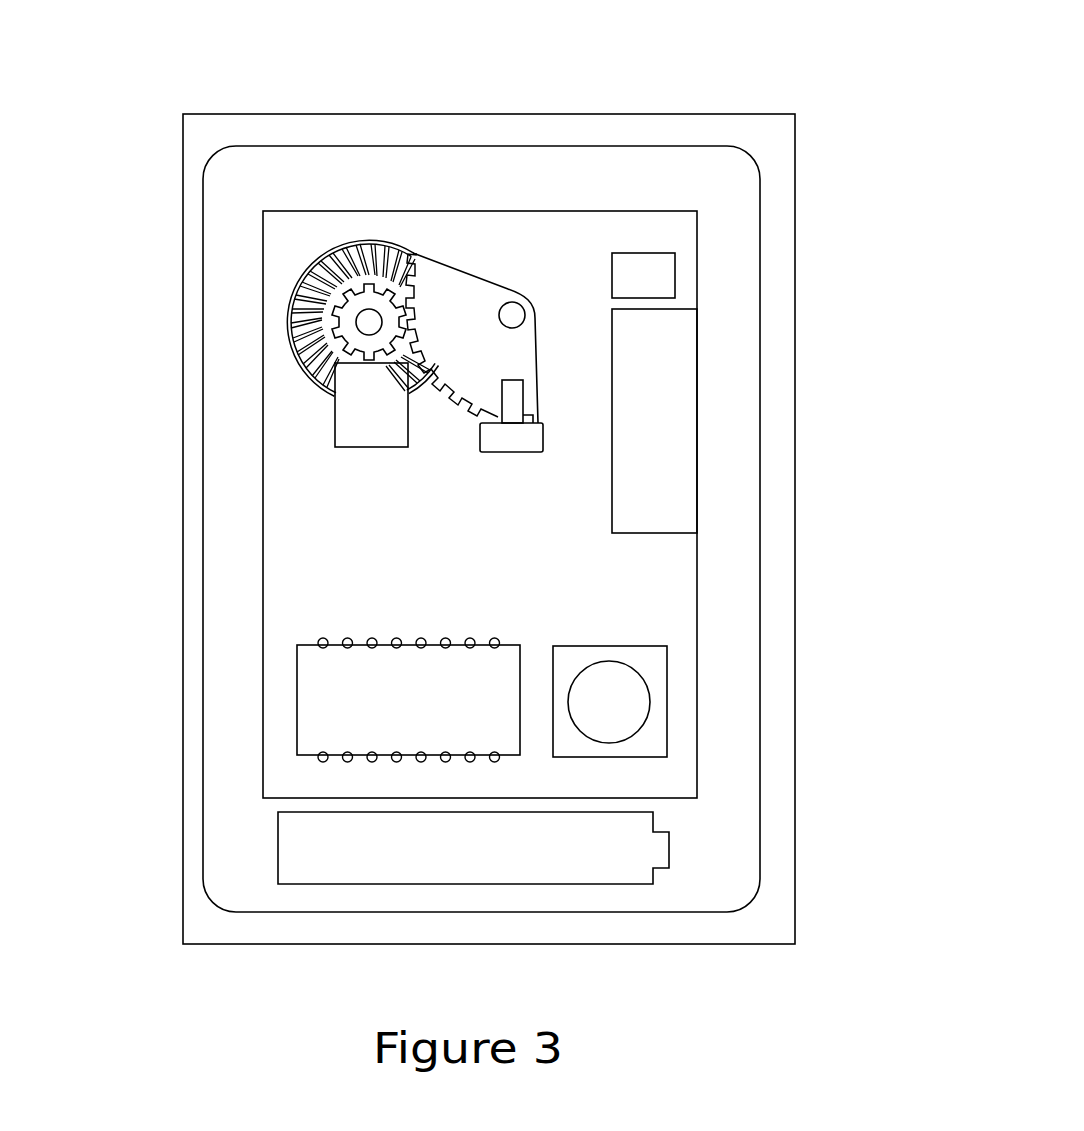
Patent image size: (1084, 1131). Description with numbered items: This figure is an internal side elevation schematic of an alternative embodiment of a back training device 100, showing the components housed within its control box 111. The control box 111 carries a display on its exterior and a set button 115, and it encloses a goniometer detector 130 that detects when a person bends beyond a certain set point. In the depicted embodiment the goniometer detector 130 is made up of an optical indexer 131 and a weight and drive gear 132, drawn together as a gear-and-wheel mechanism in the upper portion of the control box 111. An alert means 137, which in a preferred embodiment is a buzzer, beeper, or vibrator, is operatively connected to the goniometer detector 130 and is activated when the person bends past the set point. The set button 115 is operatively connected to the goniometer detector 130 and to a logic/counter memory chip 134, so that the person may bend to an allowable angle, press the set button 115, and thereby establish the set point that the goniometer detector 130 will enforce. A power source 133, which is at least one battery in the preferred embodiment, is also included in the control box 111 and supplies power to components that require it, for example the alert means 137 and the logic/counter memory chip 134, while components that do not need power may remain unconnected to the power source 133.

The back training device 100 is at (829, 125).
The control box 111 is at (810, 494).
The set button 115 is at (617, 706).
The goniometer detector 130 is at (323, 417).
The optical indexer 131 is at (369, 278).
The weight and drive gear 132 is at (468, 322).
The power source 133 is at (612, 853).
The logic/counter memory chip 134 is at (343, 696).
The alert means 137 is at (652, 279).